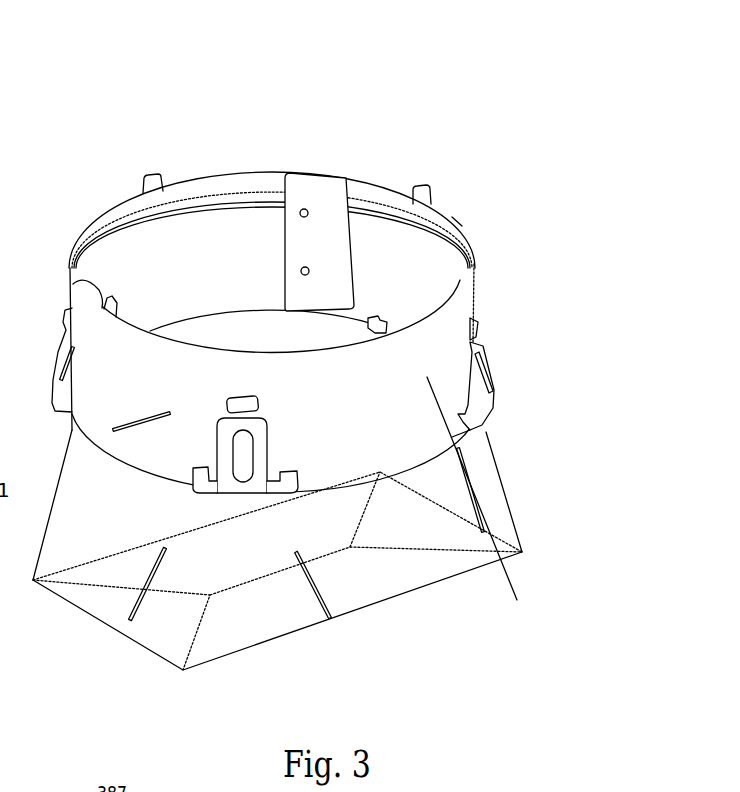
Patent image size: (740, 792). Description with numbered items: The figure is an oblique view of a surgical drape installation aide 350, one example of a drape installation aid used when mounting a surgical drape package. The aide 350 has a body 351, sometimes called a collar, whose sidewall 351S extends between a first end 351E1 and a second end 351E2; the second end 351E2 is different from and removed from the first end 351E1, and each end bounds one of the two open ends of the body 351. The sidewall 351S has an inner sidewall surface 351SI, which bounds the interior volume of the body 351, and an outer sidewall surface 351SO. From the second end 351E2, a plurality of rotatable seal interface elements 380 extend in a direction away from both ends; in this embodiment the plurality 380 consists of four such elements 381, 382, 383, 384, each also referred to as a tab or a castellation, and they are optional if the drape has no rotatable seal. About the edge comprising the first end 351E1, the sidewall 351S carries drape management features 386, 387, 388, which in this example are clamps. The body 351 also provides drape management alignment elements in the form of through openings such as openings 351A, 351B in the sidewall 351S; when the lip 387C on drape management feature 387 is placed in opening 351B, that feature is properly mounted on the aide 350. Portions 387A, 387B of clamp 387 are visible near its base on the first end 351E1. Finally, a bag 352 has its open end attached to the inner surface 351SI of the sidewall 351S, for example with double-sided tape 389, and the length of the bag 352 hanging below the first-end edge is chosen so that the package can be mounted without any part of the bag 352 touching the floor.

The surgical drape installation aide 350 is at (370, 88).
The body 351 is at (477, 240).
The through opening 351A is at (476, 321).
The through opening 351B is at (263, 397).
The first end 351E1 is at (452, 437).
The second end 351E2 is at (452, 217).
The sidewall 351S is at (198, 343).
The inner sidewall surface 351SI is at (225, 183).
The outer sidewall surface 351SO is at (467, 292).
The bag 352 is at (247, 613).
The plurality of rotatable seal interface elements 380 is at (378, 315).
The rotatable seal interface element 381 is at (435, 192).
The rotatable seal interface element 382 is at (375, 333).
The rotatable seal interface element 383 is at (100, 290).
The rotatable seal interface element 384 is at (135, 185).
The drape management feature 386 is at (502, 383).
The drape management feature 387 is at (253, 490).
The first hook portion of bracket 387A is at (198, 491).
The second hook portion of bracket 387B is at (295, 484).
The lip 387C is at (227, 403).
The drape management feature 388 is at (47, 370).
The double-sided tape 389 is at (350, 207).